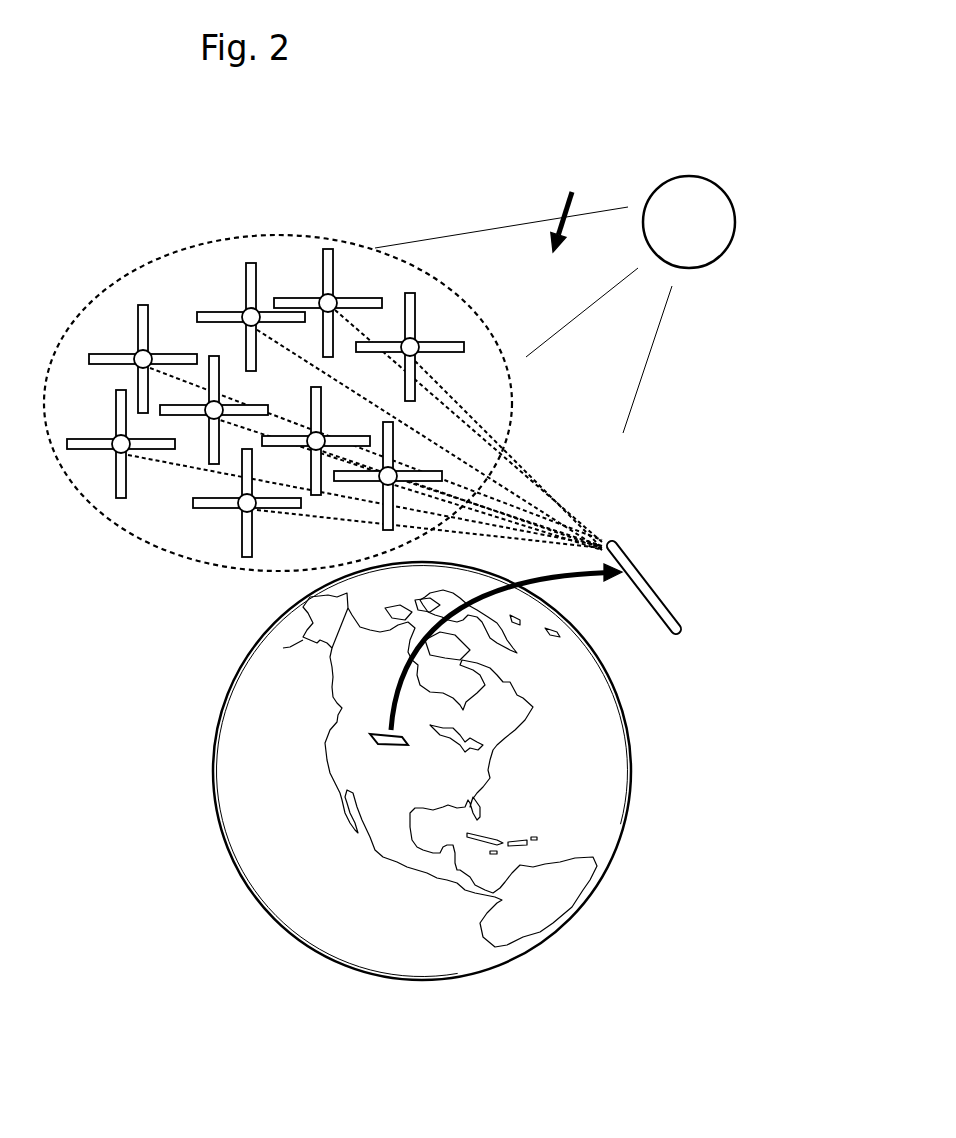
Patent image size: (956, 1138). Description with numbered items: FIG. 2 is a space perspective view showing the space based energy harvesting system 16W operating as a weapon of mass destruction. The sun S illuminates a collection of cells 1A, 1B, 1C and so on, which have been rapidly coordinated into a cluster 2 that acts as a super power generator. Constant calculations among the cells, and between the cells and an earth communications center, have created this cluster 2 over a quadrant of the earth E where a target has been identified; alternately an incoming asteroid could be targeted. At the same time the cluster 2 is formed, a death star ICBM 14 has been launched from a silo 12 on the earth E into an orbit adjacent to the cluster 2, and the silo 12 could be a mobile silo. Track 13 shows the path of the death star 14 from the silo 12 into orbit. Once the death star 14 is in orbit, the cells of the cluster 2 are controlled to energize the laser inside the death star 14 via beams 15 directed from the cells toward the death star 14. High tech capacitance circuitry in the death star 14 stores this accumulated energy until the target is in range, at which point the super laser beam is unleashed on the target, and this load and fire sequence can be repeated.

The cell 1A is at (247, 280).
The cell 1B is at (305, 297).
The cell 1C is at (407, 295).
The cluster 2 is at (72, 325).
The silo 12 is at (383, 735).
The track 13 is at (557, 582).
The death star ICBM 14 is at (645, 578).
The beams 15 is at (583, 527).
The system 16W is at (582, 208).
The sun S is at (720, 228).
The earth E is at (273, 845).